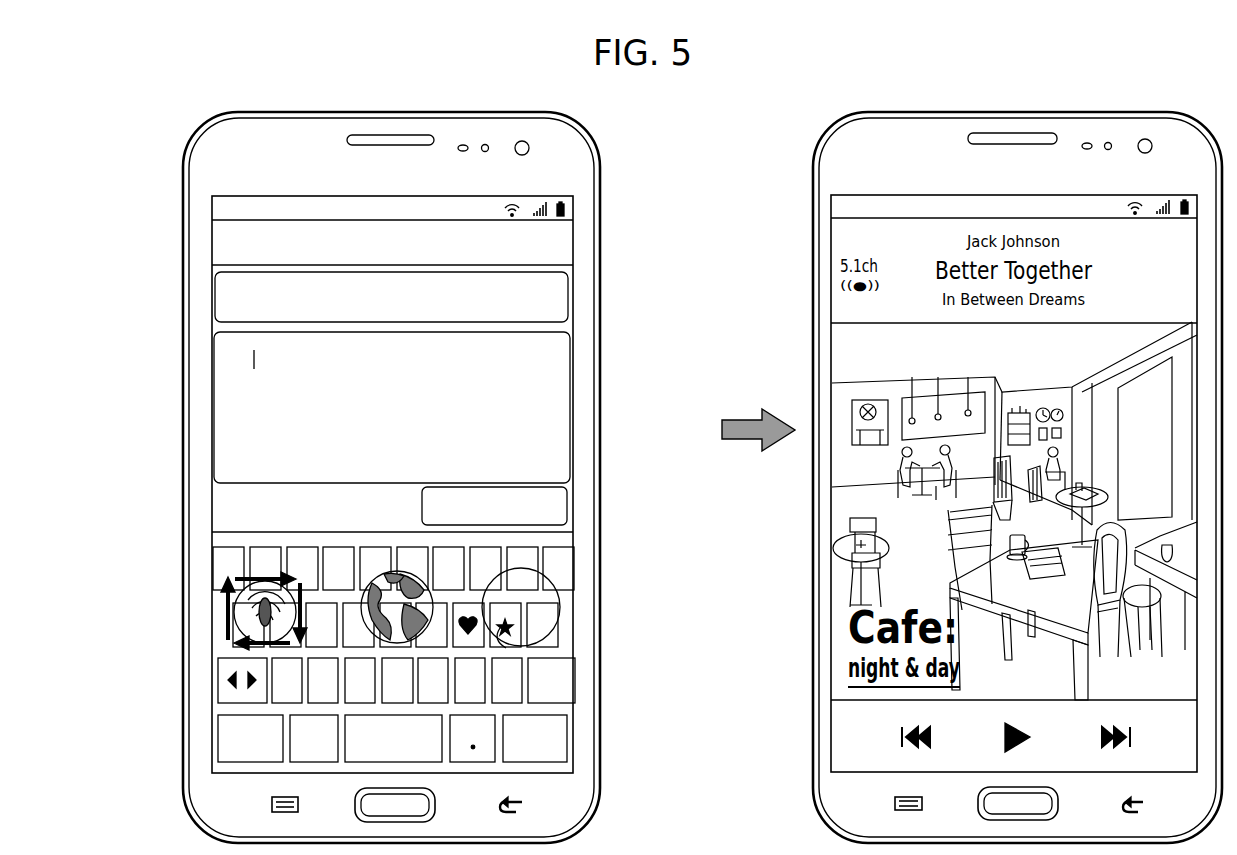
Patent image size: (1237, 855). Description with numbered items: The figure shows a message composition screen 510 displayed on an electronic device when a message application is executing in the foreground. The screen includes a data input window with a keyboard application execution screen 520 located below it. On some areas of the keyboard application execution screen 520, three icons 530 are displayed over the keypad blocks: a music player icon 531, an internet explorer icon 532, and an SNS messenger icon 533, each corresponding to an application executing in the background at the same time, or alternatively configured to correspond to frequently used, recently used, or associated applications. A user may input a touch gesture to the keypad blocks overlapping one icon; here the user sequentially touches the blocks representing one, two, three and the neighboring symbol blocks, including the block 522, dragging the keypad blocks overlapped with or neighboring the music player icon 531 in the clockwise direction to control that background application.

The message composition screen 510 is at (605, 774).
The keyboard application execution screen 520 is at (396, 638).
The key 522 is at (225, 562).
The content items displayed on keypad 530 is at (311, 672).
The music player icon 531 is at (232, 607).
The internet explorer icon 532 is at (395, 596).
The SNS messenger icon 533 is at (500, 610).